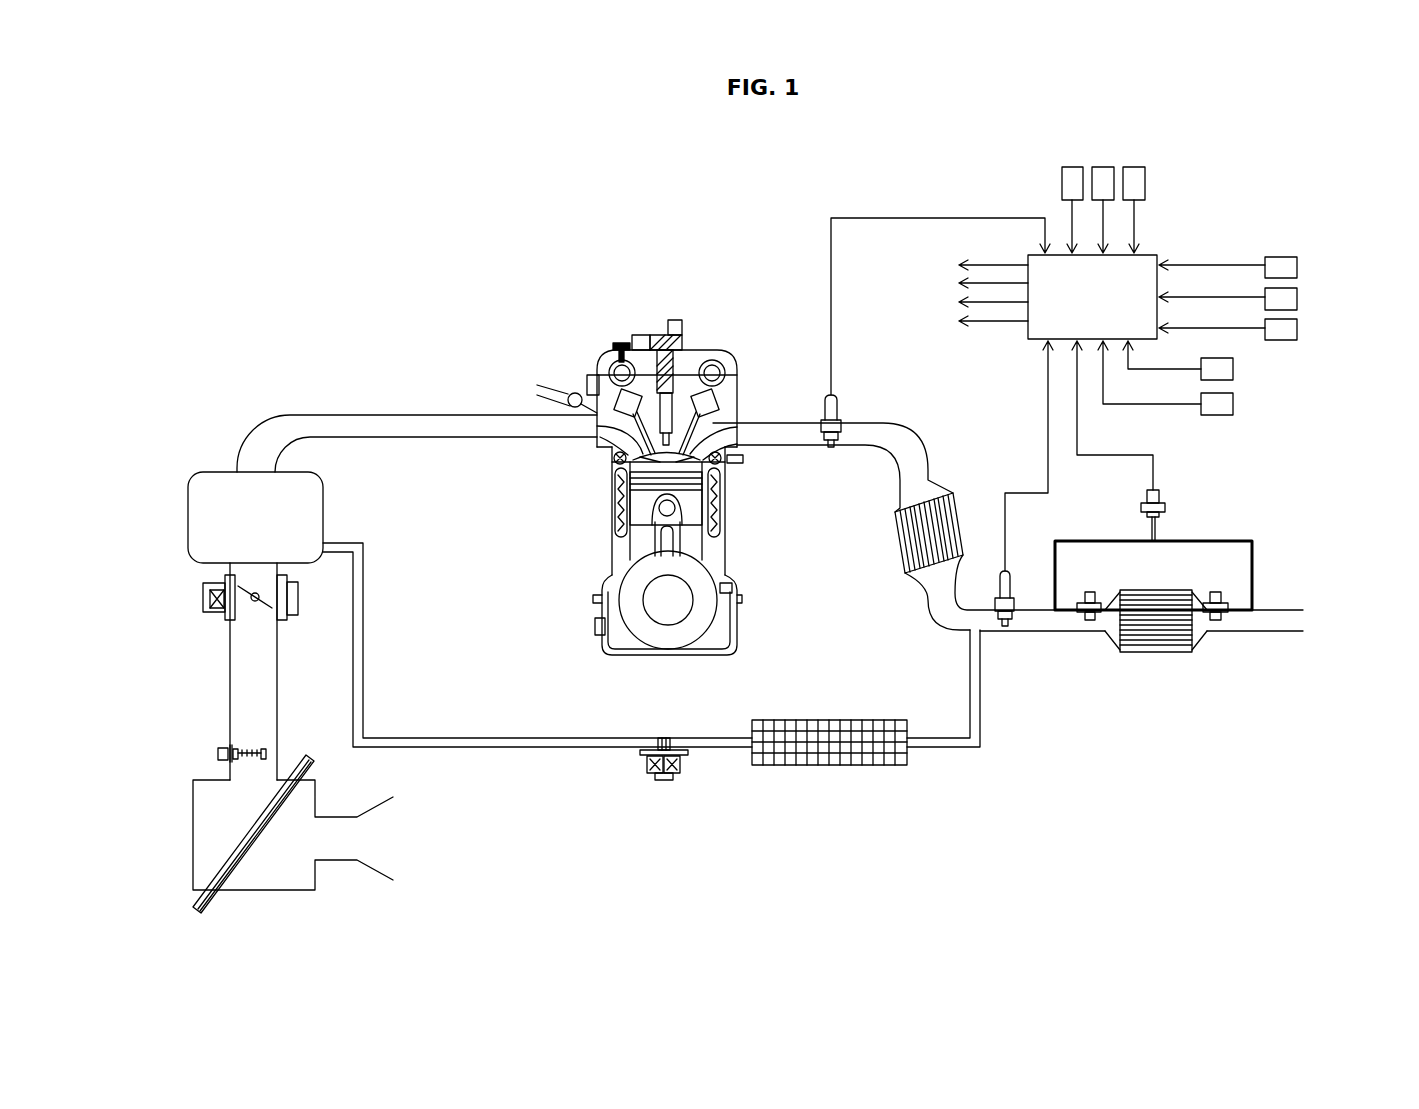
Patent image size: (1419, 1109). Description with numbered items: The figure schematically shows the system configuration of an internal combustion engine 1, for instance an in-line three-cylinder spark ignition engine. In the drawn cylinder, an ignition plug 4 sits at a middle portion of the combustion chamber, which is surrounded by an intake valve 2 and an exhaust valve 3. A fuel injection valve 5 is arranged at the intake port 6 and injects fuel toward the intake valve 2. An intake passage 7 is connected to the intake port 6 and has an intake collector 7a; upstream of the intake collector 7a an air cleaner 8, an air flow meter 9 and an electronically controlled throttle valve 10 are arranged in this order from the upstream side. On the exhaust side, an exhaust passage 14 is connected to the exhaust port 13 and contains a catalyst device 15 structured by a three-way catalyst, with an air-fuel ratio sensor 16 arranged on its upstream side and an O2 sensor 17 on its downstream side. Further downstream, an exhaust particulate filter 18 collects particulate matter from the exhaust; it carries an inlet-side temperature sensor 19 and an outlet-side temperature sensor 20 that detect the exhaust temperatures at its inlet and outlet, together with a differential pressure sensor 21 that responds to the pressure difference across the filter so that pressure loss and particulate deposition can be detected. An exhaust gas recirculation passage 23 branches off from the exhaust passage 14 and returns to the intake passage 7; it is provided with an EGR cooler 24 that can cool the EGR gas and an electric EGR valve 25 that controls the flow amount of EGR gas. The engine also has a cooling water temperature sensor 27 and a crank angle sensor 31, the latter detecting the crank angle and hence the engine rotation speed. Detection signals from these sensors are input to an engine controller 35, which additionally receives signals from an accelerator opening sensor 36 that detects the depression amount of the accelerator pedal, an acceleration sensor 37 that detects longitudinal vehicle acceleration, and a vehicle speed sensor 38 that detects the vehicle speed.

The internal combustion engine 1 is at (742, 328).
The intake valve 2 is at (612, 472).
The exhaust valve 3 is at (724, 424).
The ignition plug 4 is at (674, 345).
The fuel injection valve 5 is at (568, 402).
The intake port 6 is at (597, 437).
The intake passage 7 is at (393, 428).
The intake collector 7a is at (222, 510).
The air cleaner 8 is at (242, 858).
The air flow meter 9 is at (258, 748).
The electronically controlled throttle valve 10 is at (263, 604).
The exhaust port 13 is at (724, 437).
The exhaust passage 14 is at (915, 440).
The catalyst device 15 is at (960, 515).
The air-fuel ratio sensor 16 is at (841, 400).
The O2 sensor 17 is at (1012, 580).
The exhaust particulate filter 18 is at (1180, 652).
The inlet-side temperature sensor 19 is at (1093, 592).
The outlet-side temperature sensor 20 is at (1213, 592).
The differential pressure sensor 21 is at (1166, 503).
The exhaust gas recirculation passage 23 is at (515, 748).
The EGR cooler 24 is at (836, 766).
The electric EGR valve 25 is at (672, 782).
The cooling water temperature sensor 27 is at (744, 461).
The crank angle sensor 31 is at (735, 587).
The engine controller 35 is at (1155, 255).
The accelerator opening sensor 36 is at (1297, 267).
The acceleration sensor 37 is at (1297, 298).
The vehicle speed sensor 38 is at (1297, 333).